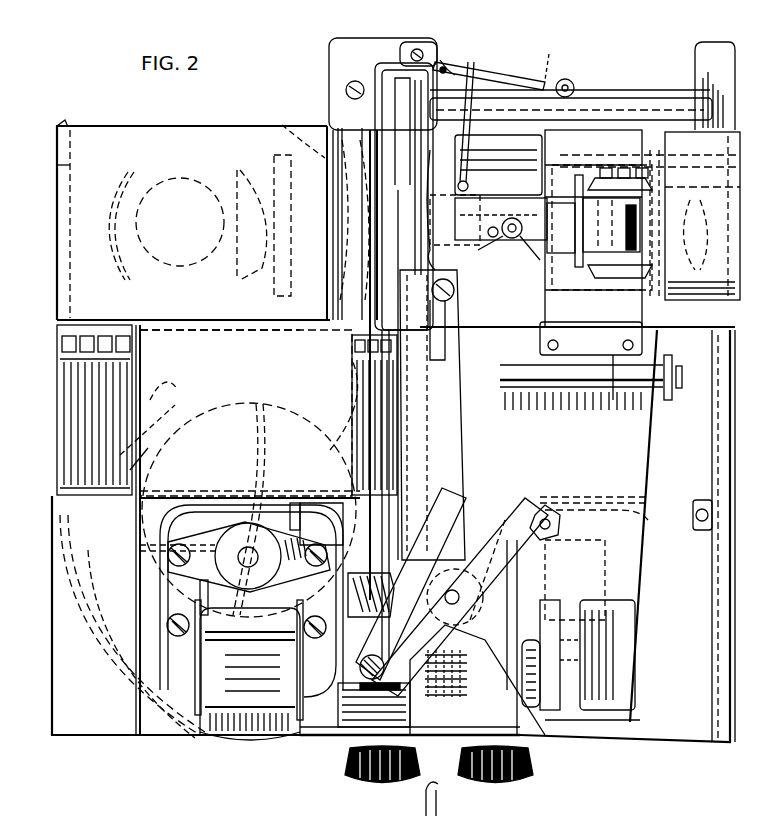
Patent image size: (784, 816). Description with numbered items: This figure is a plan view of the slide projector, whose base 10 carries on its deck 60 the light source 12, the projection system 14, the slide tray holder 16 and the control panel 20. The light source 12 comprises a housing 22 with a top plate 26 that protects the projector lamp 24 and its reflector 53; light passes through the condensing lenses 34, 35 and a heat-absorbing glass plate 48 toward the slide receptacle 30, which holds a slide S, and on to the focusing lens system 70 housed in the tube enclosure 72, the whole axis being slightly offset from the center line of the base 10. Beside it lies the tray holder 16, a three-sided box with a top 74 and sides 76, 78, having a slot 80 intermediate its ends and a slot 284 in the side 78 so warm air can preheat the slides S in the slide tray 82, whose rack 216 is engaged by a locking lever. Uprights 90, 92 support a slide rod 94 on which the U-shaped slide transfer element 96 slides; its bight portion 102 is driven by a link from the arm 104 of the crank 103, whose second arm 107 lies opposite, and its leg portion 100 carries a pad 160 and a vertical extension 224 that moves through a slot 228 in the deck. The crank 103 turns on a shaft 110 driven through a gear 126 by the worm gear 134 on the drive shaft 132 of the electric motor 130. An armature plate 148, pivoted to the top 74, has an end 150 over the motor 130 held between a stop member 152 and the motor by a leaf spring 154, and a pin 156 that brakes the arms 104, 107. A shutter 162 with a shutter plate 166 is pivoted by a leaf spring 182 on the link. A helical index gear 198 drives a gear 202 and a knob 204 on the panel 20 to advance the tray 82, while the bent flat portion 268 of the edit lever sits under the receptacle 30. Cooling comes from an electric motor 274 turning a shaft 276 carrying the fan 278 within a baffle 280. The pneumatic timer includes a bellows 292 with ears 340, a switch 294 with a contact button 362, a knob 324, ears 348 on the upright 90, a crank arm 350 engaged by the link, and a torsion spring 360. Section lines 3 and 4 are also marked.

The base 10 is at (50, 638).
The light source 12 is at (98, 125).
The projection system 14 is at (265, 130).
The slide tray holder 16 is at (162, 472).
The control panel 20 is at (332, 742).
The housing 22 is at (127, 126).
The projector lamp 24 is at (177, 188).
The top plate 26 is at (80, 163).
The slide receptacle 30 is at (370, 132).
The condensing lens 34 is at (299, 129).
The condensing lens 35 is at (240, 170).
The heat-absorbing glass plate 48 is at (264, 270).
The reflector 53 is at (118, 270).
The deck 60 is at (60, 706).
The focusing lens system 70 is at (672, 168).
The tube enclosure 72 is at (510, 168).
The top 74 is at (223, 401).
The side 76 is at (236, 496).
The side 78 is at (184, 322).
The slot 80 is at (352, 380).
The slide tray 82 is at (57, 400).
The upright 90 is at (392, 62).
The upright 92 is at (434, 738).
The slide rod 94 is at (424, 156).
The slide transfer element 96 is at (426, 474).
The leg portion 100 is at (356, 544).
The bight portion 102 is at (456, 458).
The crank 103 is at (460, 600).
The arm 104 is at (442, 690).
The second arm 107 is at (522, 498).
The shaft 110 is at (466, 636).
The gear 126 is at (568, 736).
The electric motor 130 is at (152, 598).
The drive shaft 132 is at (530, 730).
The worm gear 134 is at (458, 690).
The armature plate 148 is at (640, 437).
The end 150 is at (608, 660).
The stop member 152 is at (600, 730).
The leaf spring 154 is at (600, 680).
The pin 156 is at (558, 525).
The pad 160 is at (364, 270).
The shutter 162 is at (480, 206).
The shutter plate 166 is at (512, 218).
The leaf spring 182 is at (455, 420).
The helical index gear 198 is at (367, 609).
The gear 202 is at (344, 488).
The knob 204 is at (348, 783).
The rack 216 is at (169, 810).
The vertical extension 224 is at (438, 808).
The slot 228 is at (400, 100).
The bent flat portion 268 is at (385, 240).
The electric motor 274 is at (212, 726).
The shaft 276 is at (264, 557).
The fan 278 is at (110, 564).
The baffle 280 is at (112, 690).
The slot 284 is at (312, 346).
The bellows 292 is at (606, 98).
The switch 294 is at (515, 60).
The knob 324 is at (522, 786).
The ears 340 is at (570, 78).
The ears 348 is at (480, 68).
The crank arm 350 is at (472, 152).
The torsion spring 360 is at (442, 58).
The contact button 362 is at (553, 59).
The section line 3 is at (627, 62).
The section line 4 is at (330, 582).
The slide S is at (365, 418).